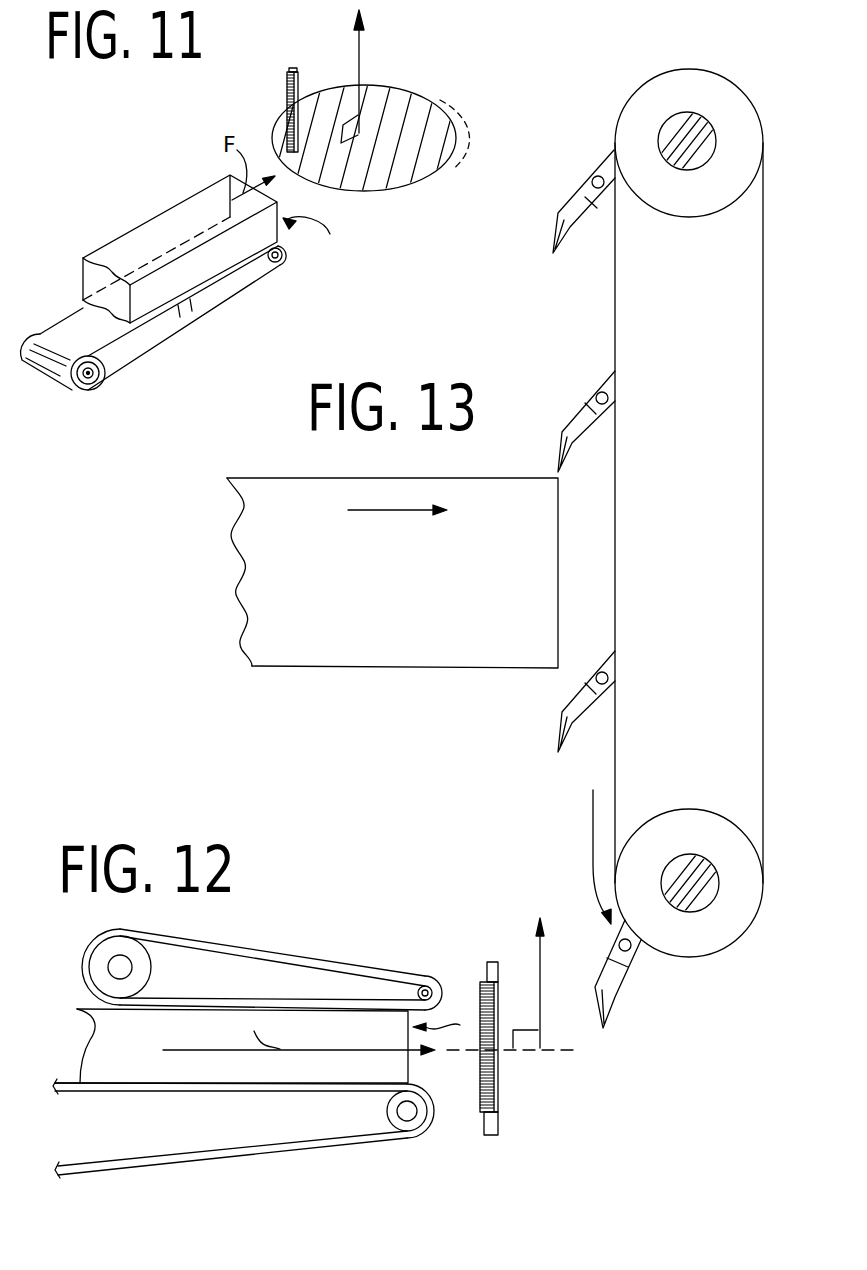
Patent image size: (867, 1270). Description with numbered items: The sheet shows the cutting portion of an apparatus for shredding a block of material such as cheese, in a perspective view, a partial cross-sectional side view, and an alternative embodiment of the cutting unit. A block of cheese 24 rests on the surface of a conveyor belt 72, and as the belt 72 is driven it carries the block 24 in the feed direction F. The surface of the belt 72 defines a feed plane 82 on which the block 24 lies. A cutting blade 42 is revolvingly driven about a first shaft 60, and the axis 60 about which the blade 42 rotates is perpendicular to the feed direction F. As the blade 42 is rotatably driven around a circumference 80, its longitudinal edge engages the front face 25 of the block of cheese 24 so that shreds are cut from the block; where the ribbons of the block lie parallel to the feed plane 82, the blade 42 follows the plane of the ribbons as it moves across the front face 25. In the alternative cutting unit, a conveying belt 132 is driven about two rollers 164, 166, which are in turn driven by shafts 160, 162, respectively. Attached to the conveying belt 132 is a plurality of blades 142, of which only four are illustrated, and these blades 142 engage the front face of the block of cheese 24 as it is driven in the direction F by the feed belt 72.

In FIG. 11, the block of material 24 is at (153, 230).
In FIG. 13, the block of material 24 is at (390, 561).
In FIG. 12, the block of material 24 is at (100, 1023).
In FIG. 11, the front face 25 is at (313, 240).
In FIG. 12, the front face 25 is at (443, 1015).
In FIG. 11, the cutting blade 42 is at (286, 78).
In FIG. 12, the cutting blade 42 is at (498, 1088).
In FIG. 11, the first shaft 60 is at (360, 58).
In FIG. 12, the first shaft 60 is at (538, 964).
In FIG. 11, the conveyor belt 72 is at (63, 320).
In FIG. 12, the conveyor belt 72 is at (100, 1170).
In FIG. 11, the circumference 80 is at (400, 185).
In FIG. 11, the feed plane 82 is at (443, 124).
In FIG. 13, the conveying belt 132 is at (763, 637).
In FIG. 13, the blades 142 is at (553, 252).
In FIG. 13, the shaft 160 is at (717, 143).
In FIG. 13, the shaft 162 is at (717, 868).
In FIG. 13, the roller 164 is at (740, 195).
In FIG. 13, the roller 166 is at (745, 897).